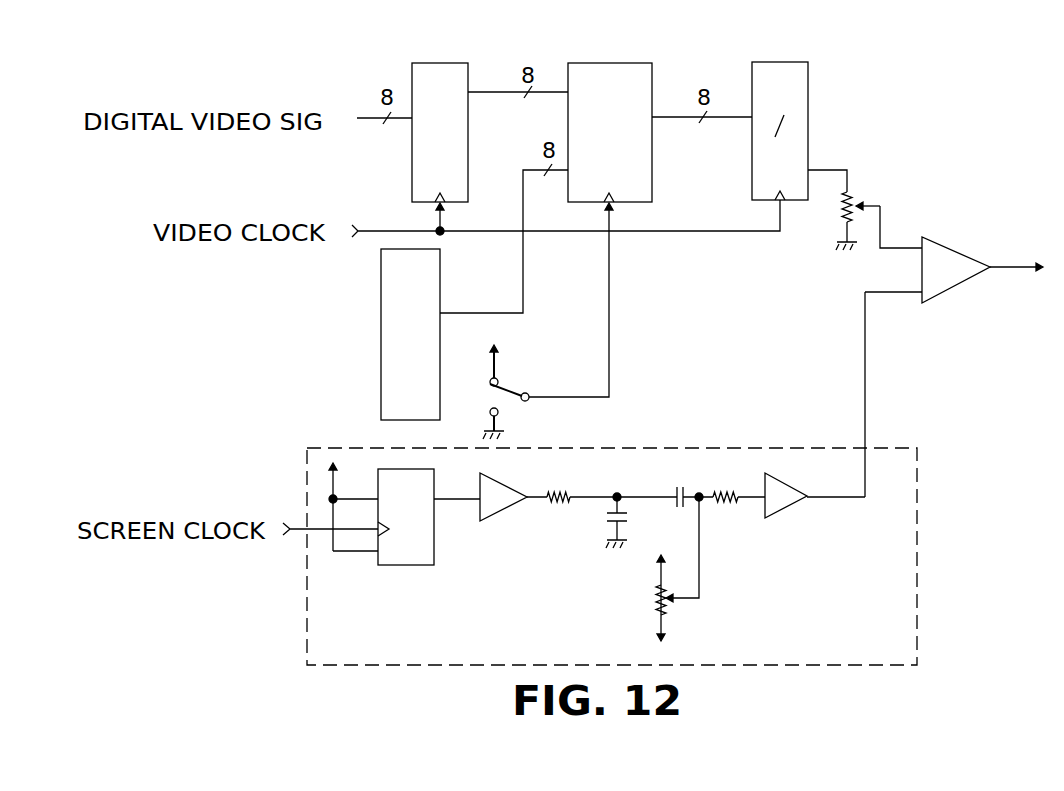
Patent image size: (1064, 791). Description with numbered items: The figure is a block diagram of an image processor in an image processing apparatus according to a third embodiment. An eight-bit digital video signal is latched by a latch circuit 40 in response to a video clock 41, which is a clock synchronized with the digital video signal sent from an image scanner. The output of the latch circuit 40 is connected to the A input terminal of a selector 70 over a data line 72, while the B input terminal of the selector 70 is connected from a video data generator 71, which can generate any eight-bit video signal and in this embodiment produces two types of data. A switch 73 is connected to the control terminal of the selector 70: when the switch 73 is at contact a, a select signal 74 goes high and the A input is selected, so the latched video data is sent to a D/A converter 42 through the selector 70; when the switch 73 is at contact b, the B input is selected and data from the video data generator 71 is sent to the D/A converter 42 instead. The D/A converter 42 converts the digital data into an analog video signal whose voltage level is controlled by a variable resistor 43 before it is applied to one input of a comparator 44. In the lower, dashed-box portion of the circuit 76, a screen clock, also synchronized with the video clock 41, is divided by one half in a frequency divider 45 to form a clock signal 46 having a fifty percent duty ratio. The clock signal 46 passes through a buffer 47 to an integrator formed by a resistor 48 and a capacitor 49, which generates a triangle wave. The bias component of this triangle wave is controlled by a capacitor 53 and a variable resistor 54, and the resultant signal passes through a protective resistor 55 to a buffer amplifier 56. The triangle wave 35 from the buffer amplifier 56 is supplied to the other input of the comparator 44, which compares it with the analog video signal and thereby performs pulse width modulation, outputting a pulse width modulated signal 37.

The latch circuit 40 is at (437, 62).
The selector 70 is at (612, 62).
The D/A converter 42 is at (778, 62).
The variable resistor 43 is at (860, 198).
The comparator 44 is at (962, 245).
The pulse width modulated signal 37 is at (1008, 278).
The video clock 41 is at (370, 240).
The video data generator 71 is at (443, 262).
The video data line 72 is at (525, 275).
The switch 73 is at (513, 385).
The select signal 74 is at (612, 340).
The triangle wave 35 is at (868, 383).
The frequency divider 45 is at (410, 567).
The clock signal 46 is at (460, 502).
The buffer 47 is at (505, 482).
The resistor 48 is at (548, 500).
The capacitor 49 is at (607, 516).
The capacitor 53 is at (678, 486).
The variable resistor 54 is at (655, 600).
The protective resistor 55 is at (722, 500).
The buffer amplifier 56 is at (793, 505).
The screen clock circuit 76 is at (919, 557).